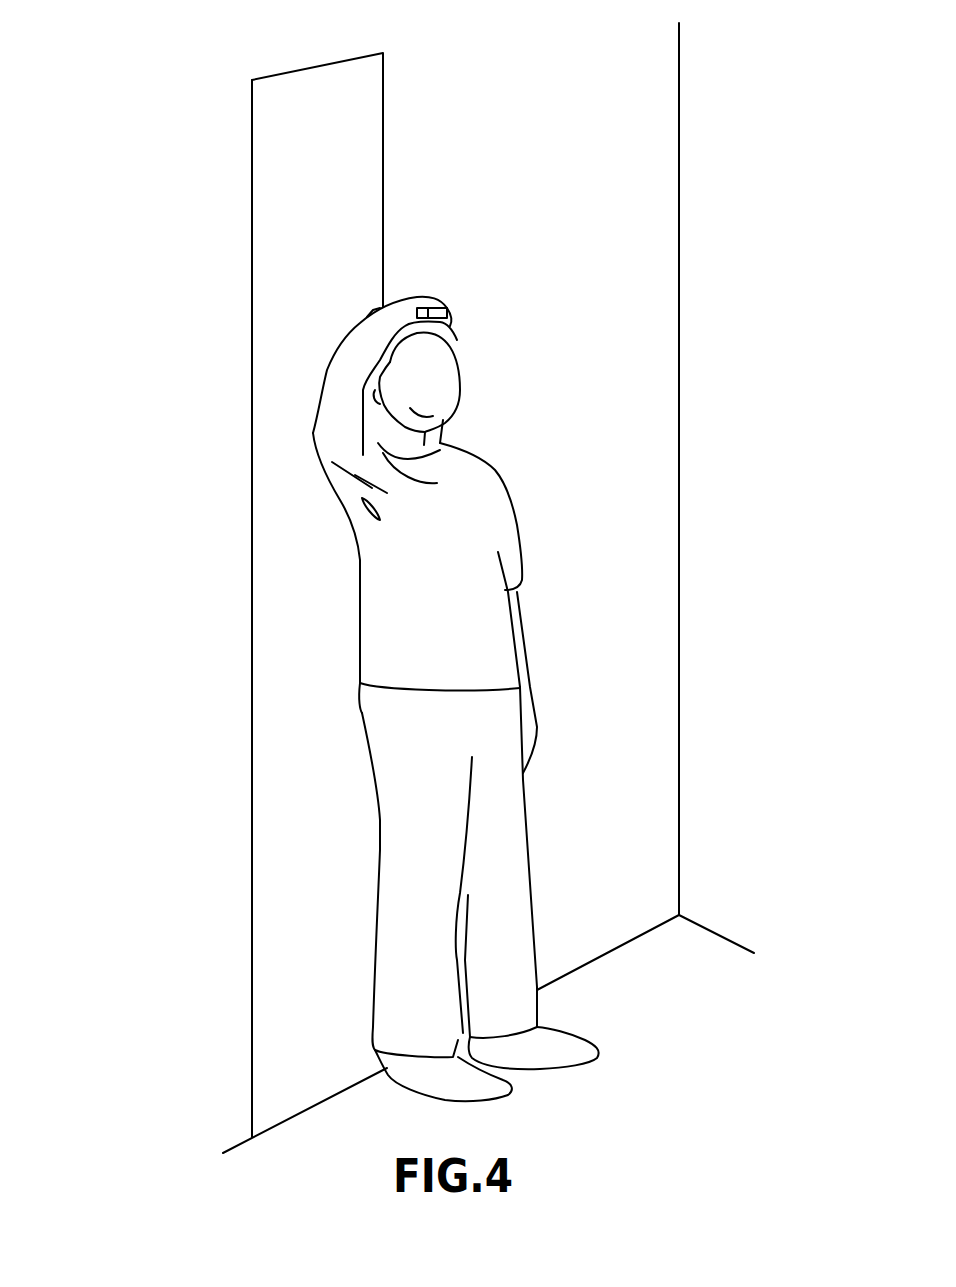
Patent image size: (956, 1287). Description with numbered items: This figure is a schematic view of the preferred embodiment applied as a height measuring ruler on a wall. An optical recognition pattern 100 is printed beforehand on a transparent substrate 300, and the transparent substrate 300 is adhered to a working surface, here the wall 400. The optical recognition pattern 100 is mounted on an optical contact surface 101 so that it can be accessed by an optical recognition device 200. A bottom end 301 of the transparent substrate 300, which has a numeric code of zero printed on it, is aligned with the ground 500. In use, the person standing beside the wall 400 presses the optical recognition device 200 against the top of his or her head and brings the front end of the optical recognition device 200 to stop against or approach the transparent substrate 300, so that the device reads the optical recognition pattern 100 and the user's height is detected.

The optical recognition pattern 100 is at (235, 575).
The optical contact surface 101 is at (270, 130).
The optical recognition device 200 is at (447, 313).
The transparent substrate 300 is at (245, 245).
The bottom end 301 is at (312, 1107).
The wall 400 is at (617, 187).
The ground 500 is at (657, 963).